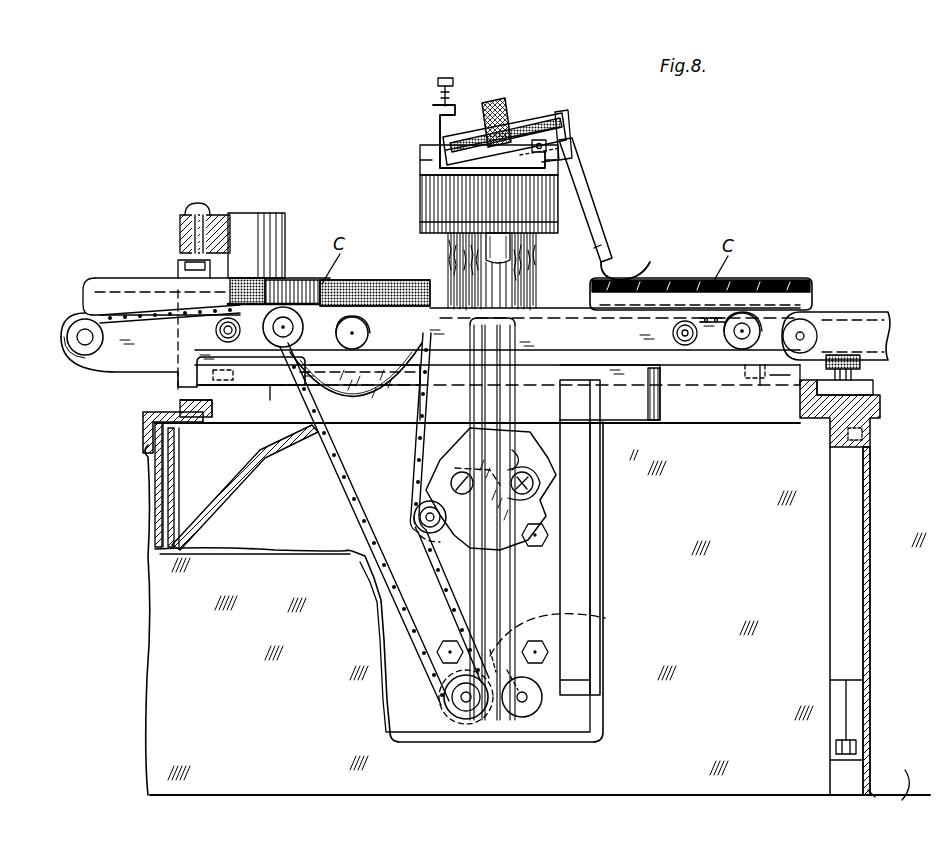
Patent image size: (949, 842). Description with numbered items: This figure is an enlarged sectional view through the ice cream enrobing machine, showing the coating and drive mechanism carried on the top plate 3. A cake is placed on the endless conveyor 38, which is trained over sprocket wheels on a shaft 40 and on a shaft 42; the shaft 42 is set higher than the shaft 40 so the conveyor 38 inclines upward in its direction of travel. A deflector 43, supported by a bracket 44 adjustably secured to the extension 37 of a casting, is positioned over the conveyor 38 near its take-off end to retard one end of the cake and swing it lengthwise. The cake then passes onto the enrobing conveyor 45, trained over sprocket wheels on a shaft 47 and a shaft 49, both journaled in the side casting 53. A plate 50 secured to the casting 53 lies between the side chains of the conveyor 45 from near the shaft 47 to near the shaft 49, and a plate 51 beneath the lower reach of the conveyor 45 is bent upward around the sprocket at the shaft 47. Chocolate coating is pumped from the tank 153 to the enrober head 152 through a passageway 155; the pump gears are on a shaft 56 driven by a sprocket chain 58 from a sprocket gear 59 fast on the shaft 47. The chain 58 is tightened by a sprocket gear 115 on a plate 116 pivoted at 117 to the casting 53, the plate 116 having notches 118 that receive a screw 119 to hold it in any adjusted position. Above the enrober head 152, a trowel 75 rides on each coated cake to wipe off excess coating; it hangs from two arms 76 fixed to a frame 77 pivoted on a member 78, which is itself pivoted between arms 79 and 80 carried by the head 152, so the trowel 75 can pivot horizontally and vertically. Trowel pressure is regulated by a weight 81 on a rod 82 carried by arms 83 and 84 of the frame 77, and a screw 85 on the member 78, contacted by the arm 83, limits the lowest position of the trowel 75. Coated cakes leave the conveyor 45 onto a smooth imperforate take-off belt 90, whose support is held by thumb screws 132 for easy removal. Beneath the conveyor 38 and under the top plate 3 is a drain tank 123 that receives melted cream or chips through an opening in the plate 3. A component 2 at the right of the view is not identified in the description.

The post 2 is at (870, 530).
The top plate 3 is at (818, 410).
The extension 37 is at (216, 217).
The endless conveyor 38 is at (134, 314).
The shaft 40 is at (75, 340).
The shaft 42 is at (290, 285).
The deflector 43 is at (280, 233).
The bracket 44 is at (245, 214).
The enrobing conveyor 45 is at (666, 308).
The shaft 47 is at (352, 318).
The shaft 49 is at (742, 330).
The plate 50 is at (526, 316).
The plate 51 is at (644, 380).
The side casting 53 is at (156, 356).
The shaft 56 is at (464, 704).
The sprocket chain 58 is at (400, 458).
The sprocket gear 59 is at (386, 402).
The trowel 75 is at (622, 276).
The arms 76 is at (586, 192).
The frame 77 is at (548, 148).
The member 78 is at (520, 168).
The arm 79 is at (424, 160).
The arm 80 is at (558, 166).
The weight 81 is at (494, 112).
The rod 82 is at (524, 125).
The arm 83 is at (437, 124).
The arm 84 is at (562, 116).
The screw 85 is at (432, 96).
The take-off belt 90 is at (866, 316).
The sprocket gear 115 is at (420, 508).
The plate 116 is at (502, 556).
The pivot 117 is at (452, 483).
The notches 118 is at (520, 446).
The screw 119 is at (535, 482).
The drain tank 123 is at (206, 487).
The thumb screws 132 is at (852, 350).
The enrober head 152 is at (420, 198).
The tank 153 is at (304, 522).
The passageway 155 is at (566, 648).